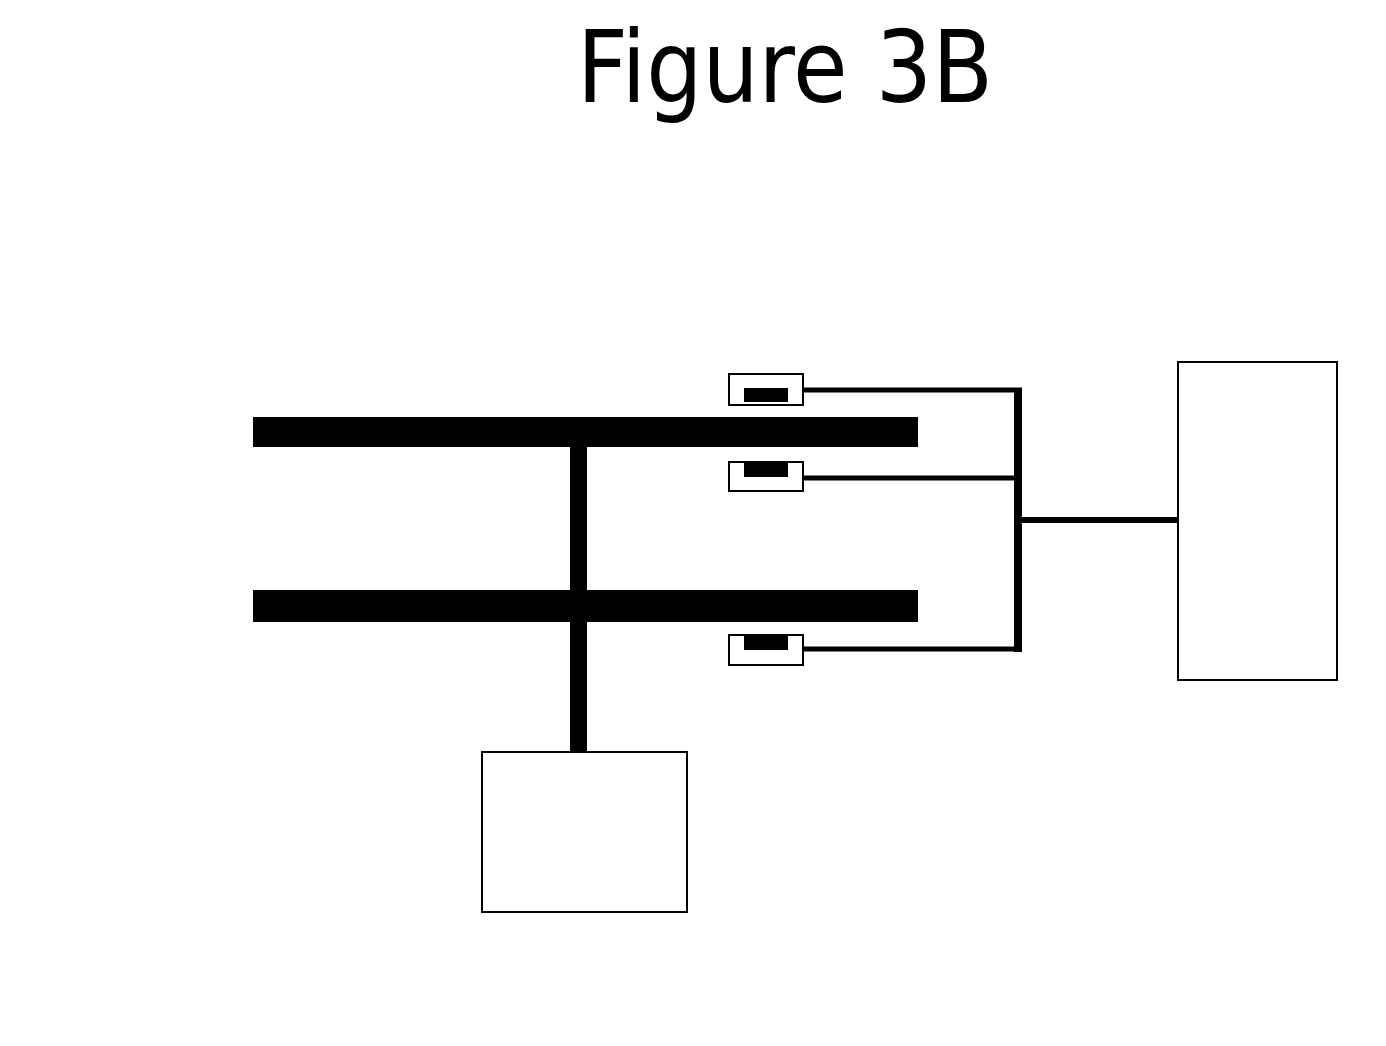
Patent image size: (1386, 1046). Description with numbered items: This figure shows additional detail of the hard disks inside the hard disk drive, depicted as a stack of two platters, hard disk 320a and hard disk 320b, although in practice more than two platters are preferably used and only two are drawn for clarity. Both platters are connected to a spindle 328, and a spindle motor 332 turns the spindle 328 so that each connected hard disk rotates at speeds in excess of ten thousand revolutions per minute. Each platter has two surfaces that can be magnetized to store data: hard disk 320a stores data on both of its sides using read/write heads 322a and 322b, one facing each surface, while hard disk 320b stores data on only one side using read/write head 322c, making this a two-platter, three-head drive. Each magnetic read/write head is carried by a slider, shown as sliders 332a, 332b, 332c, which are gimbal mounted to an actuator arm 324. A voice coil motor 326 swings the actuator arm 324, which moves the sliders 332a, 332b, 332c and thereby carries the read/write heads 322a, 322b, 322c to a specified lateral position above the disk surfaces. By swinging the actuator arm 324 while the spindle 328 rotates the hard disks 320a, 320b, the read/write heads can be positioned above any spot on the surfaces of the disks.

The hard disk 320a is at (297, 417).
The hard disk 320b is at (302, 589).
The read/write head 322a is at (743, 398).
The read/write head 322b is at (758, 477).
The read/write head 322c is at (758, 651).
The actuator arm 324 is at (1013, 653).
The voice coil motor 326 is at (1283, 561).
The spindle 328 is at (570, 547).
The spindle motor 332 is at (563, 882).
The slider 332a is at (787, 372).
The slider 332b is at (790, 492).
The slider 332c is at (790, 665).